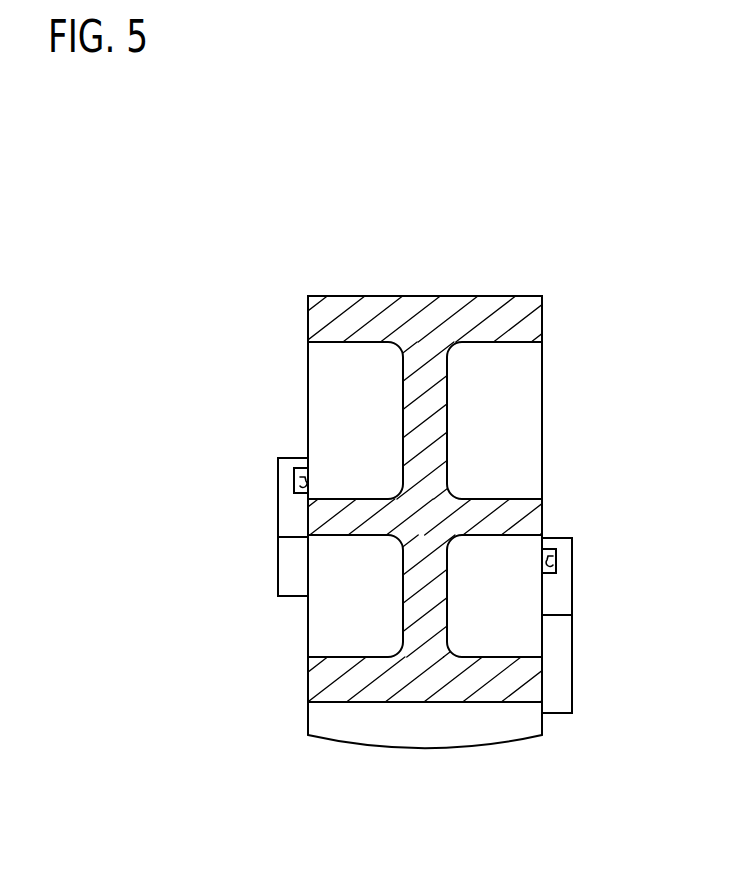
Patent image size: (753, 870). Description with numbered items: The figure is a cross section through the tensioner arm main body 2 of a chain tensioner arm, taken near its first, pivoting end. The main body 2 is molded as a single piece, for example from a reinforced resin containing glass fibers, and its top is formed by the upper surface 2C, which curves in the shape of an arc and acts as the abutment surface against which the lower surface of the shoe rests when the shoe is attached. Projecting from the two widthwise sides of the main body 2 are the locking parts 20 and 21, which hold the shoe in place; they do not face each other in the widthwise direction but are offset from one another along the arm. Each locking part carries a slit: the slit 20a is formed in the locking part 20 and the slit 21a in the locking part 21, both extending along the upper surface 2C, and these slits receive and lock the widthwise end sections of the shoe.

The tensioner arm main body 2 is at (535, 240).
The upper surface 2C is at (380, 295).
The locking part 20 is at (287, 519).
The slit 20a is at (297, 482).
The locking part 21 is at (558, 600).
The slit 21a is at (553, 567).